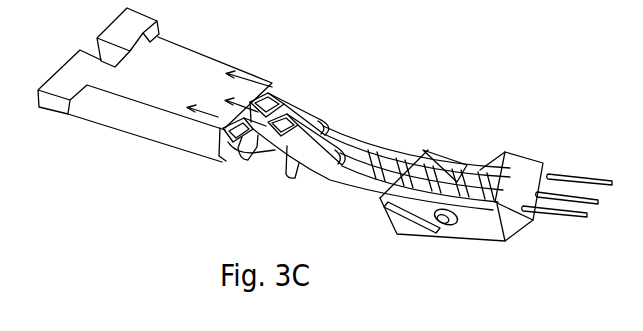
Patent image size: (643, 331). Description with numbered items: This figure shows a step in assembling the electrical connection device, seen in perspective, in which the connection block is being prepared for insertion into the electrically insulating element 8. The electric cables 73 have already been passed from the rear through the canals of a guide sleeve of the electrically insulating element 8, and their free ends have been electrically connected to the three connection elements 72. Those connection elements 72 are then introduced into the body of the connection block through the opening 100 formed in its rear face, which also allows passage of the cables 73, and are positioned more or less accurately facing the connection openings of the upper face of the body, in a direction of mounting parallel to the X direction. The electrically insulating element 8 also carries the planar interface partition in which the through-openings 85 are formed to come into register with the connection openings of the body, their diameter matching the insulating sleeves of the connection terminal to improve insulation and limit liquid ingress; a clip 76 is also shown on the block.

The electrically insulating element 8 is at (120, 135).
The opening 100 is at (275, 98).
The clip 76 is at (223, 157).
The connection elements 72 is at (280, 160).
The connection cables 73 is at (398, 148).
The through-openings 85 is at (448, 221).